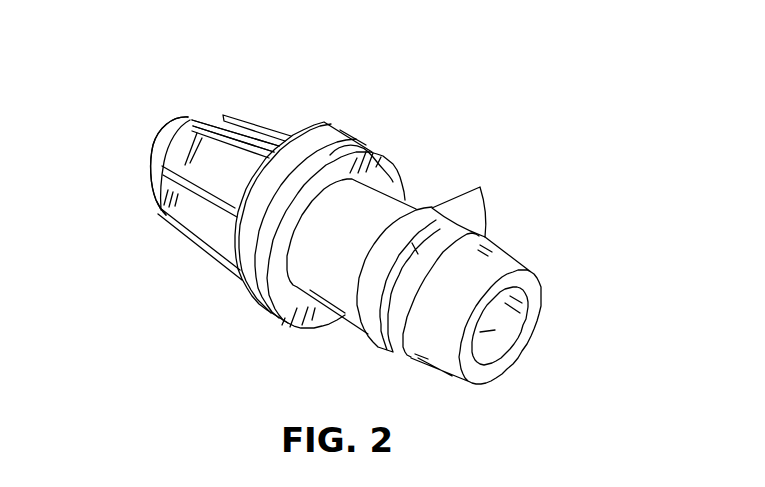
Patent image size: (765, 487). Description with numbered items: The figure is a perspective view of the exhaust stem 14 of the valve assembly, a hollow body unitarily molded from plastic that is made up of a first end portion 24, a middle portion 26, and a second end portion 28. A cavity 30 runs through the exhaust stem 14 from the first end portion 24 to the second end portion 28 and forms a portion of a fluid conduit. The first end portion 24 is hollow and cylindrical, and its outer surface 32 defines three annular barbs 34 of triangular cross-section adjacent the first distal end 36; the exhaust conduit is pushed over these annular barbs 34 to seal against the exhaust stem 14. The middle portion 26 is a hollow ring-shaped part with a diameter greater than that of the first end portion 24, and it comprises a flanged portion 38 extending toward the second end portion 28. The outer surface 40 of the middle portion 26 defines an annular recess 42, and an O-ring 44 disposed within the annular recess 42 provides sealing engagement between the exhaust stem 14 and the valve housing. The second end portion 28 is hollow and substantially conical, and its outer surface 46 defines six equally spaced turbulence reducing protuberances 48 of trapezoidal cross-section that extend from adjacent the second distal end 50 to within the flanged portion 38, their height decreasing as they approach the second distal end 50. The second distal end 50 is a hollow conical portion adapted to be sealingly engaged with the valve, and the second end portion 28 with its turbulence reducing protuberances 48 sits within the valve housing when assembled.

The exhaust stem 14 is at (485, 92).
The first end portion 24 is at (413, 208).
The middle portion 26 is at (374, 150).
The second end portion 28 is at (203, 116).
The cavity 30 is at (499, 332).
The outer surface 32 is at (376, 165).
The annular barbs 34 is at (480, 188).
The first distal end 36 is at (527, 270).
The flanged portion 38 is at (321, 124).
The outer surface 40 is at (343, 134).
The annular recess 42 is at (366, 131).
The O-ring 44 is at (247, 285).
The outer surface 46 is at (213, 120).
The turbulence reducing protuberances 48 is at (162, 167).
The second distal end 50 is at (160, 135).